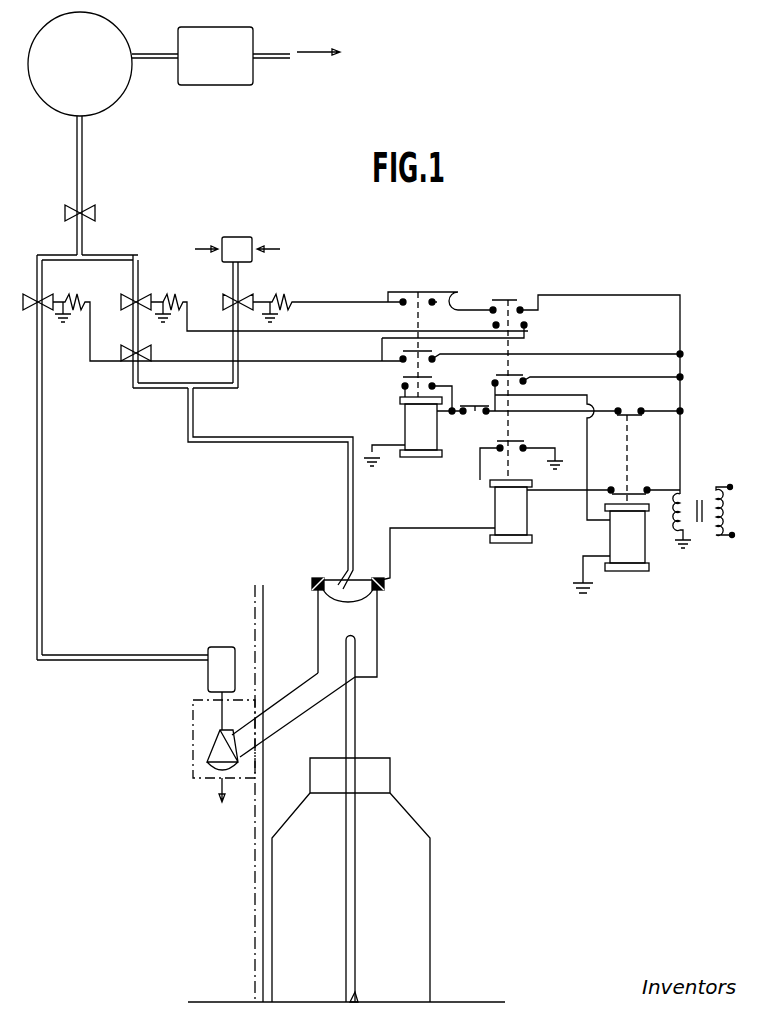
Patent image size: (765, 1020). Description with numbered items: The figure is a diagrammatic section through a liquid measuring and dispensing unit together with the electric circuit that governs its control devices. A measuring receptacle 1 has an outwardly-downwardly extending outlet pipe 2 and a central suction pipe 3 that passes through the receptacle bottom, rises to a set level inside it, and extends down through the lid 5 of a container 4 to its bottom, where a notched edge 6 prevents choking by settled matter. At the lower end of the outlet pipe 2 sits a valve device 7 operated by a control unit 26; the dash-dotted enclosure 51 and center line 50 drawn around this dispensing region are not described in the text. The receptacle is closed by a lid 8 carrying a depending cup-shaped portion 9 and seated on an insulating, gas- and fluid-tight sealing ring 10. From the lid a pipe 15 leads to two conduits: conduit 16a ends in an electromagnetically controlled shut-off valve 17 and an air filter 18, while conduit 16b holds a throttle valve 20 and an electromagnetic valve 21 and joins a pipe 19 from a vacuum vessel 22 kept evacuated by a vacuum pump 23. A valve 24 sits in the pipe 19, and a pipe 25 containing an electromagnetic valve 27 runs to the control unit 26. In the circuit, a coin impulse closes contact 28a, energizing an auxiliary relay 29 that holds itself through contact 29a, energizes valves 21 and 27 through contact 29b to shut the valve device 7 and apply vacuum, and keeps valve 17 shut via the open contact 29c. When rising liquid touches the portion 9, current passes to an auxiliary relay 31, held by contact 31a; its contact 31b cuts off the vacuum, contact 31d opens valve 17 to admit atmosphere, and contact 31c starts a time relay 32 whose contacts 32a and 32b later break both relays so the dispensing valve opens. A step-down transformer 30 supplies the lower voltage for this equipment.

The measuring receptacle 1 is at (375, 620).
The outlet pipe 2 is at (298, 698).
The suction pipe 3 is at (352, 655).
The container 4 is at (427, 835).
The lid 5 is at (378, 765).
The undulated or notched edge 6 is at (360, 995).
The valve device 7 is at (212, 746).
The lid 8 is at (352, 577).
The cup-shaped central portion 9 is at (358, 599).
The sealing means 10 is at (385, 580).
The pipe 15 is at (348, 518).
The conduit 16a is at (218, 389).
The conduit 16b is at (163, 389).
The electromagnetically controlled shut-off valve 17 is at (246, 297).
The air filter 18 is at (243, 237).
The pipe 19 is at (83, 153).
The throttle valve 20 is at (141, 347).
The electromagnetically controlled valve 21 is at (142, 297).
The vacuum vessel 22 is at (122, 82).
The vacuum pump 23 is at (233, 73).
The valve 24 is at (96, 207).
The pipe 25 is at (44, 398).
The control unit 26 is at (225, 648).
The electromagnetically controlled valve 27 is at (47, 296).
The contact 28a is at (539, 423).
The auxiliary relay 29 is at (440, 447).
The contact 29a is at (405, 380).
The contact 29b is at (430, 360).
The contact 29c is at (426, 293).
The step-down transformer 30 is at (699, 497).
The auxiliary relay 31 is at (531, 528).
The contact 31a is at (518, 440).
The contact 31b is at (478, 328).
The contact 31c is at (517, 374).
The contact 31d is at (525, 287).
The time relay 32 is at (643, 560).
The contact 32a is at (641, 421).
The contact 32b is at (632, 489).
The center line 50 is at (258, 824).
The enclosure 51 is at (197, 717).